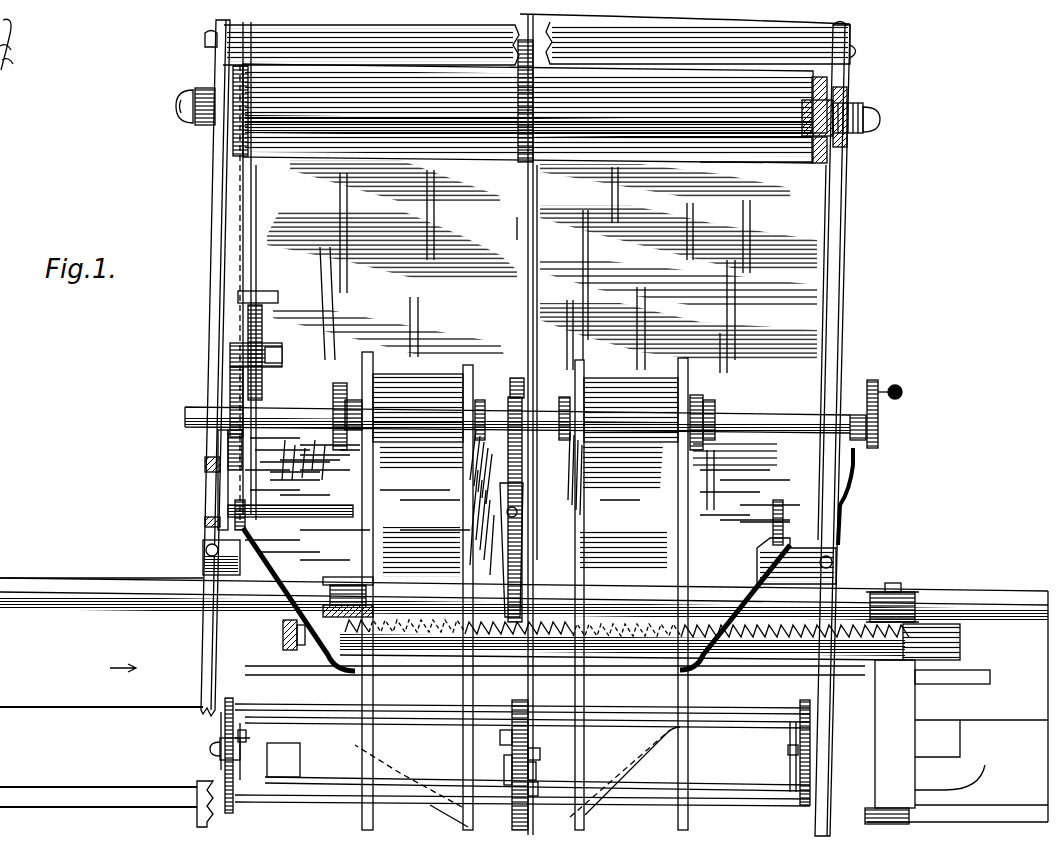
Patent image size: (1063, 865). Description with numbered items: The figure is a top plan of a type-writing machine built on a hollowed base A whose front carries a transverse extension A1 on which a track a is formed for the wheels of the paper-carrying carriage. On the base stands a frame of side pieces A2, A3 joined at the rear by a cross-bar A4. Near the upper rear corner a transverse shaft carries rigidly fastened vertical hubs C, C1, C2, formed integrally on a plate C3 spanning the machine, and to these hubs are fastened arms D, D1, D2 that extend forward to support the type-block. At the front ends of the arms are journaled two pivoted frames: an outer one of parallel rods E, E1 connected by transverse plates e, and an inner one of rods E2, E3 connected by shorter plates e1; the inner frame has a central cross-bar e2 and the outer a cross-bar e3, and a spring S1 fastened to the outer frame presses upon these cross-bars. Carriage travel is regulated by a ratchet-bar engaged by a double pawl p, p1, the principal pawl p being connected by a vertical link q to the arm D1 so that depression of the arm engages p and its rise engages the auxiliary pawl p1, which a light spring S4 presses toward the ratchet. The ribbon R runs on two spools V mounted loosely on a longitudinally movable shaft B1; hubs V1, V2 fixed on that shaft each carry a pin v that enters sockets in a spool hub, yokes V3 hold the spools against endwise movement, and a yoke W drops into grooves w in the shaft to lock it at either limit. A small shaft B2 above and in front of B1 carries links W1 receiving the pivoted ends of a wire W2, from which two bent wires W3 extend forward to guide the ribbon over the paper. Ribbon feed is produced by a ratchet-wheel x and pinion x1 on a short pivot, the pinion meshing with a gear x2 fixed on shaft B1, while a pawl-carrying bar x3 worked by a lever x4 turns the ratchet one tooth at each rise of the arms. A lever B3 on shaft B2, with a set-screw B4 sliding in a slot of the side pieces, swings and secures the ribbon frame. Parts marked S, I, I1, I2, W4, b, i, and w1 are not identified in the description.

The base A is at (528, 321).
The transverse extension A1 is at (101, 665).
The side piece A2 is at (211, 210).
The side piece A3 is at (836, 238).
The cross-bar A4 is at (252, 52).
The shaft B1 is at (400, 128).
The small shaft B2 is at (300, 502).
The lever B3 is at (222, 508).
The set-screw B4 is at (205, 462).
The vertical hub C is at (252, 150).
The vertical hub C1 is at (535, 150).
The vertical hub C2 is at (811, 142).
The plate C3 is at (751, 151).
The arm D is at (258, 192).
The arm D1 is at (540, 190).
The arm D2 is at (822, 208).
The rod E is at (300, 703).
The rod E1 is at (280, 802).
The rod E2 is at (310, 726).
The rod E3 is at (300, 778).
The slide I is at (508, 760).
The slide arm (I') I1 is at (537, 764).
The slide block (I'') I2 is at (540, 797).
The ribbon R is at (624, 640).
The bolt S is at (851, 31).
The spring S1 is at (218, 750).
The light spring S4 is at (520, 550).
The spool V is at (372, 362).
The hub V1 is at (712, 414).
The hub V2 is at (348, 386).
The yoke V3 is at (562, 400).
The yoke W is at (852, 486).
The link W1 is at (781, 512).
The wire W2 is at (740, 600).
The wire W3 is at (300, 677).
The left link rod (W'''') W4 is at (318, 565).
The track a is at (116, 662).
The bolt b is at (528, 112).
The transverse plate e is at (232, 698).
The transverse plate e1 is at (789, 747).
The central cross-bar e2 is at (500, 733).
The cross-bar e3 is at (535, 752).
The pin i is at (507, 800).
The principal pawl p is at (508, 450).
The auxiliary pawl p1 is at (532, 573).
The vertical link q is at (513, 380).
The pin v is at (696, 418).
The groove w is at (870, 400).
The collar (w') w1 is at (858, 422).
The ratchet-wheel x is at (265, 335).
The pinion x1 is at (262, 378).
The gear x2 is at (257, 274).
The bar x3 is at (255, 270).
The lever x4 is at (252, 447).